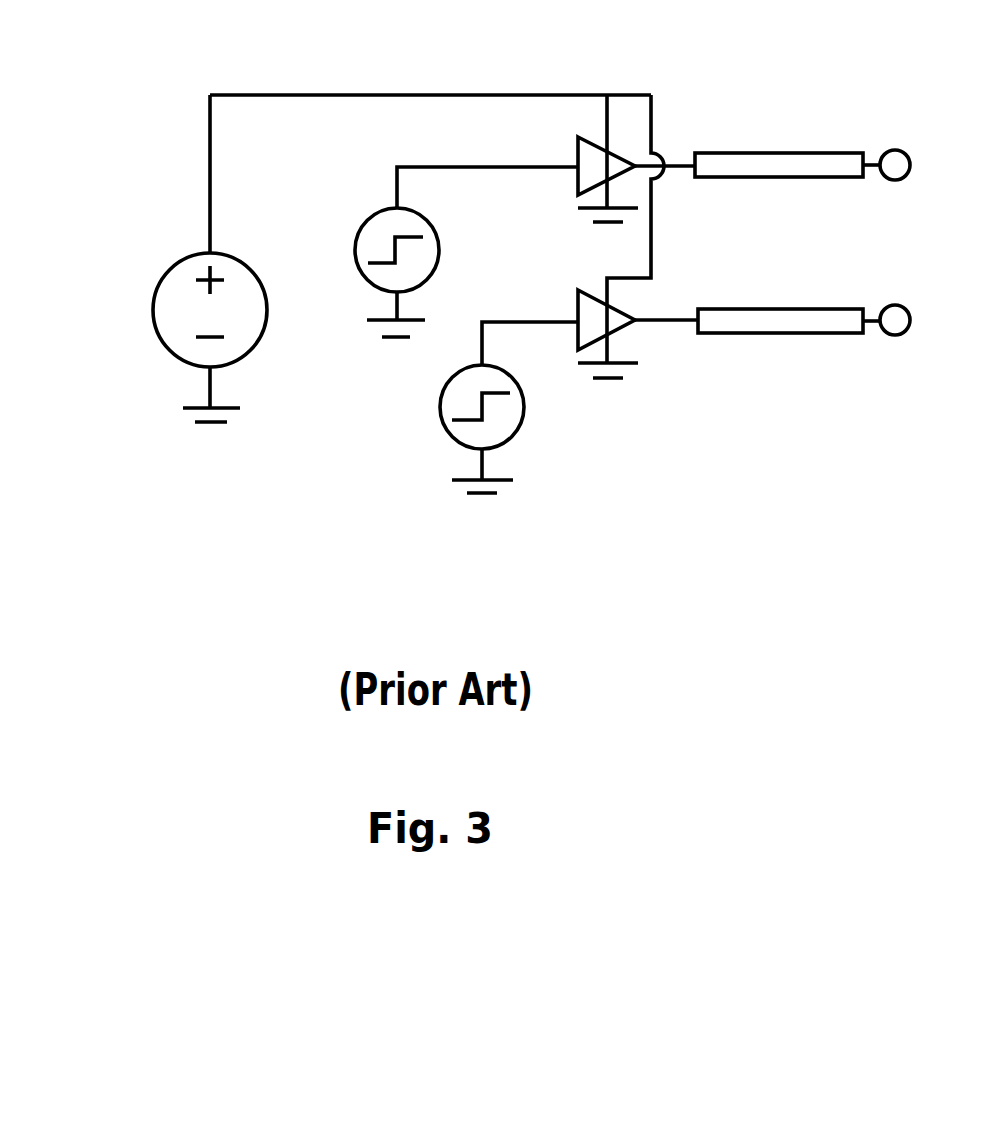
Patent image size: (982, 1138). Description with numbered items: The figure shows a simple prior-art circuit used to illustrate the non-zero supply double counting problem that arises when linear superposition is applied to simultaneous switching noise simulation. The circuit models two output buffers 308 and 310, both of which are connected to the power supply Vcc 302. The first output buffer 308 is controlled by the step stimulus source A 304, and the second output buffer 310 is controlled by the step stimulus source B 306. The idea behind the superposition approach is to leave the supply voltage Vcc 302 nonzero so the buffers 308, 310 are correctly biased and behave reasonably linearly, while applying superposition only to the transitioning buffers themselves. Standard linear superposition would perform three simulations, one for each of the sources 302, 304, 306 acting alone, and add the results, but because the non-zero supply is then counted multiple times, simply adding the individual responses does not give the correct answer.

The power supply Vcc 302 is at (184, 257).
The step stimulus source A 304 is at (373, 215).
The step stimulus source B 306 is at (522, 423).
The output buffer 308 is at (608, 155).
The output buffer 310 is at (625, 327).